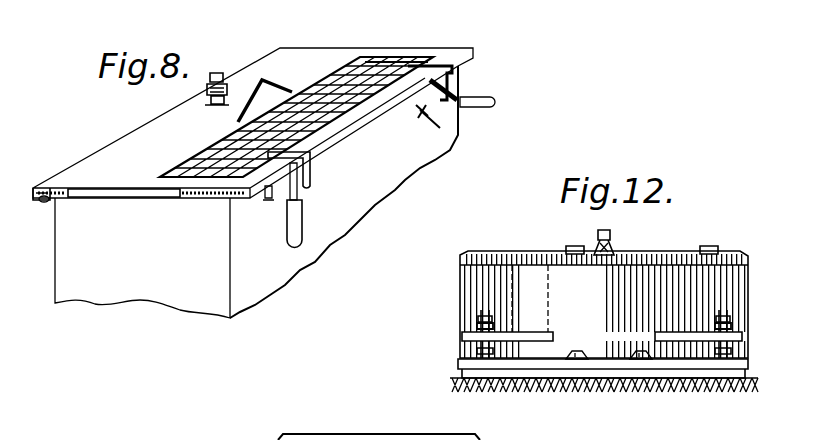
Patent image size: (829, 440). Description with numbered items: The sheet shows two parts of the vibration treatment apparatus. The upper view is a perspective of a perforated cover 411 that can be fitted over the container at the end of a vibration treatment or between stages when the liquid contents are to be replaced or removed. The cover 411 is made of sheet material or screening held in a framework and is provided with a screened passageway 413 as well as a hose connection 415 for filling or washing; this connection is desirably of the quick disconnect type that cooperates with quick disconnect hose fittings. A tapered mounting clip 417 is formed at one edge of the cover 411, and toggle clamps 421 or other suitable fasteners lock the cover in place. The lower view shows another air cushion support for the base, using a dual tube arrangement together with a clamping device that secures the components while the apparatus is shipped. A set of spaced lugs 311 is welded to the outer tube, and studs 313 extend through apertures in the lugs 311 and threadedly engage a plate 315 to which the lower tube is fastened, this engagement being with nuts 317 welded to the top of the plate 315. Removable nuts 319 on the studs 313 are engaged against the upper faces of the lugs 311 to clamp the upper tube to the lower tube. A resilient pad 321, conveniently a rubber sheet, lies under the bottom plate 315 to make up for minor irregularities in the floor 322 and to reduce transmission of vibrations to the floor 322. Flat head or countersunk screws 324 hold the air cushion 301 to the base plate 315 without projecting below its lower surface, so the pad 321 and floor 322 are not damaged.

In FIG. 8, the cover 411 is at (113, 148).
In FIG. 8, the screened passageway 413 is at (375, 62).
In FIG. 8, the hose connection 415 is at (218, 73).
In FIG. 8, the tapered mounting clip 417 is at (45, 200).
In FIG. 8, the toggle clamp 421 is at (310, 167).
In FIG. 12, the air cushion 301 is at (604, 244).
In FIG. 12, the lug 311 is at (518, 332).
In FIG. 12, the stud 313 is at (482, 318).
In FIG. 12, the plate 315 is at (458, 364).
In FIG. 12, the nut 317 is at (478, 351).
In FIG. 12, the removable nut 319 is at (477, 326).
In FIG. 12, the resilient pad 321 is at (458, 379).
In FIG. 12, the floor 322 is at (505, 386).
In FIG. 12, the screw 324 is at (580, 360).